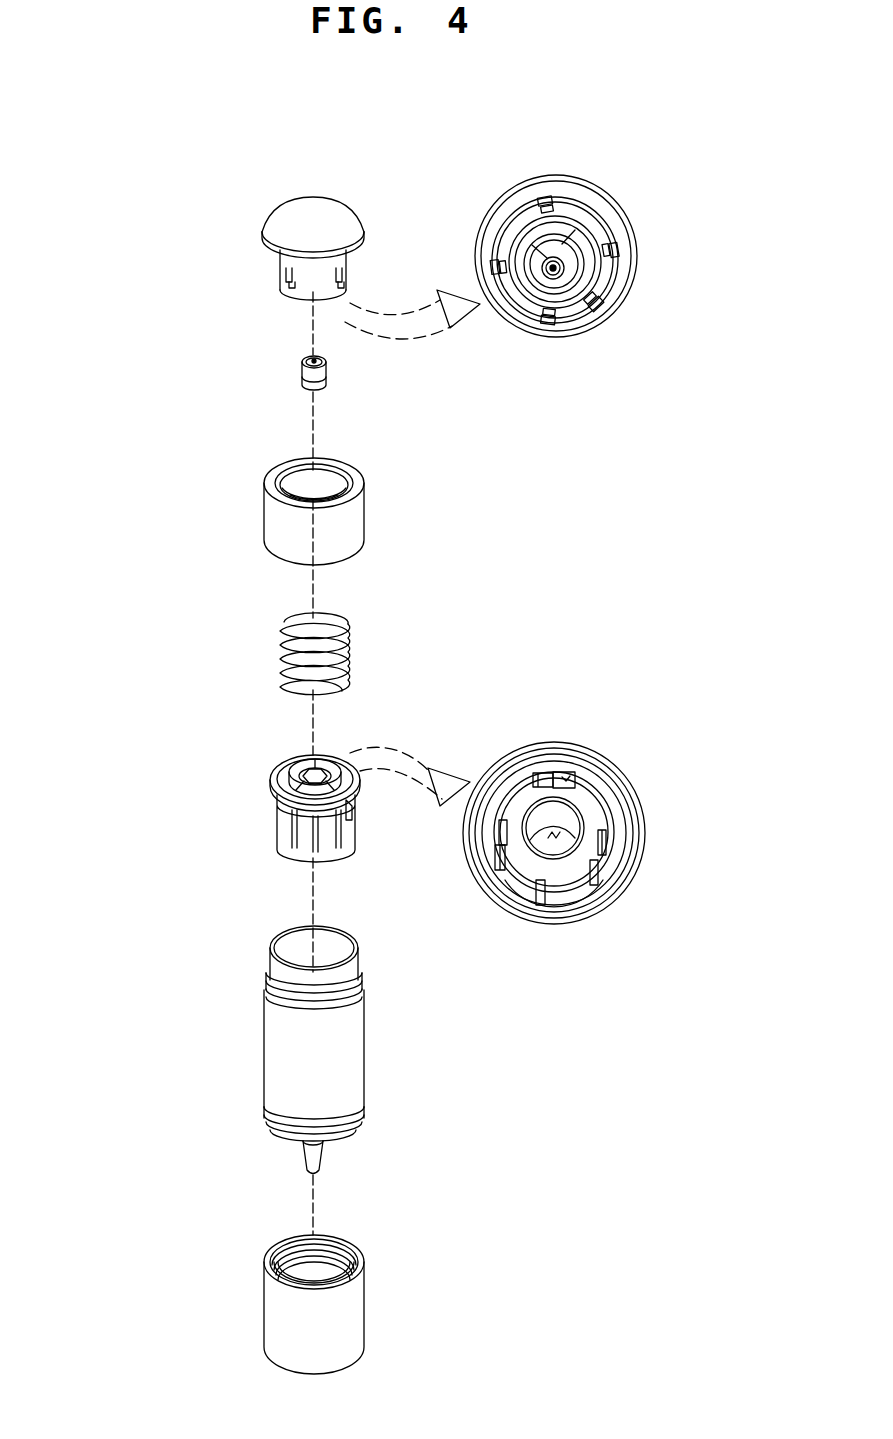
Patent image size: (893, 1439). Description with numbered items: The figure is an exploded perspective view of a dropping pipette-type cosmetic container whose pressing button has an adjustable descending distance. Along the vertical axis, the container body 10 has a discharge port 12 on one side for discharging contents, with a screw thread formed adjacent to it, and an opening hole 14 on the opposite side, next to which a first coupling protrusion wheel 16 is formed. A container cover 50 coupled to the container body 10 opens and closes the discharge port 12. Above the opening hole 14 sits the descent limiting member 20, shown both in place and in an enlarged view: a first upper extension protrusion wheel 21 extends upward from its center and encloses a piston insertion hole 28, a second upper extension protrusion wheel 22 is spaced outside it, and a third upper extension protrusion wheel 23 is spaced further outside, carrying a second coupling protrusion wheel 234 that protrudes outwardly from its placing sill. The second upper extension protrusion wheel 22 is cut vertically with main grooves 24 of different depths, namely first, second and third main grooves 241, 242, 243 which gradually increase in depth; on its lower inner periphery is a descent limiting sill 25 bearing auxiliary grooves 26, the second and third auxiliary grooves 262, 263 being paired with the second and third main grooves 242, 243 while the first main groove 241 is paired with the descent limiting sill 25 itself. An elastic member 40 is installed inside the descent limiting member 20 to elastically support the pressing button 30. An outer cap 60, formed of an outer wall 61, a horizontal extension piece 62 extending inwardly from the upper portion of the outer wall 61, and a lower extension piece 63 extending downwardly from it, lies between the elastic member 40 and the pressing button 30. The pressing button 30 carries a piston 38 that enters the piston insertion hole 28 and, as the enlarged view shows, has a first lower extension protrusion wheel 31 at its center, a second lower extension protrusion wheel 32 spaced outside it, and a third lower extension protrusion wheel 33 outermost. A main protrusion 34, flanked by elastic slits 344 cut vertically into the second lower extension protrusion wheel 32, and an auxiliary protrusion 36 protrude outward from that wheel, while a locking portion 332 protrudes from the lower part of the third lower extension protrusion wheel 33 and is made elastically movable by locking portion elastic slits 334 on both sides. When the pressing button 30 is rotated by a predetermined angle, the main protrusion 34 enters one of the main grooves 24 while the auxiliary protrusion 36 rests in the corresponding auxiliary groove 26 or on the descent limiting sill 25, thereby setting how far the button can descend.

The container body 10 is at (243, 1084).
The discharge port 12 is at (318, 1178).
The opening hole 14 is at (305, 955).
The first coupling protrusion wheel 16 is at (268, 982).
The descent limiting member 20 is at (243, 820).
The first upper extension protrusion wheel 21 is at (303, 765).
The second upper extension protrusion wheel 22 is at (290, 768).
The third upper extension protrusion wheel 23 is at (278, 795).
The second coupling protrusion wheel 234 is at (352, 808).
The main groove 24 is at (627, 1013).
The first main groove 241 is at (545, 860).
The second main groove 242 is at (605, 848).
The third main groove 243 is at (496, 858).
The descent limiting sill 25 is at (600, 815).
The auxiliary groove 26 is at (620, 656).
The second auxiliary groove 262 is at (540, 780).
The third auxiliary groove 263 is at (577, 787).
The piston insertion hole 28 is at (565, 852).
The pressing button 30 is at (243, 254).
The first lower extension protrusion wheel 31 is at (601, 218).
The second lower extension protrusion wheel 32 is at (620, 250).
The third lower extension protrusion wheel 33 is at (603, 296).
The locking portion 332 is at (297, 279).
The locking portion elastic slit 334 is at (292, 290).
The main protrusion 34 is at (547, 203).
The elastic slit 344 is at (560, 252).
The auxiliary protrusion 36 is at (597, 300).
The piston 38 is at (300, 374).
The elastic member 40 is at (280, 648).
The container cover 50 is at (243, 1338).
The outer cap 60 is at (243, 520).
The outer wall 61 is at (355, 535).
The horizontal extension piece 62 is at (355, 490).
The lower extension piece 63 is at (337, 473).